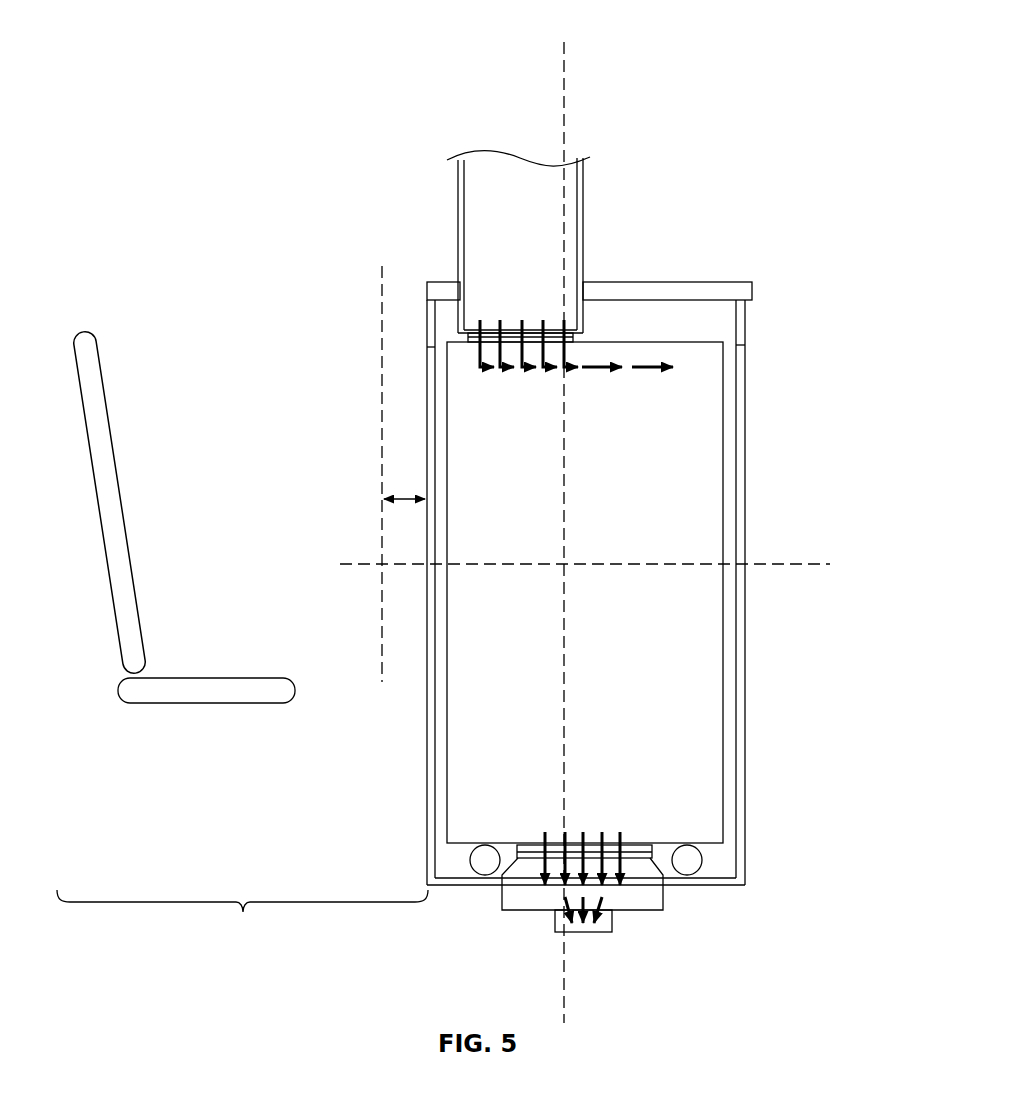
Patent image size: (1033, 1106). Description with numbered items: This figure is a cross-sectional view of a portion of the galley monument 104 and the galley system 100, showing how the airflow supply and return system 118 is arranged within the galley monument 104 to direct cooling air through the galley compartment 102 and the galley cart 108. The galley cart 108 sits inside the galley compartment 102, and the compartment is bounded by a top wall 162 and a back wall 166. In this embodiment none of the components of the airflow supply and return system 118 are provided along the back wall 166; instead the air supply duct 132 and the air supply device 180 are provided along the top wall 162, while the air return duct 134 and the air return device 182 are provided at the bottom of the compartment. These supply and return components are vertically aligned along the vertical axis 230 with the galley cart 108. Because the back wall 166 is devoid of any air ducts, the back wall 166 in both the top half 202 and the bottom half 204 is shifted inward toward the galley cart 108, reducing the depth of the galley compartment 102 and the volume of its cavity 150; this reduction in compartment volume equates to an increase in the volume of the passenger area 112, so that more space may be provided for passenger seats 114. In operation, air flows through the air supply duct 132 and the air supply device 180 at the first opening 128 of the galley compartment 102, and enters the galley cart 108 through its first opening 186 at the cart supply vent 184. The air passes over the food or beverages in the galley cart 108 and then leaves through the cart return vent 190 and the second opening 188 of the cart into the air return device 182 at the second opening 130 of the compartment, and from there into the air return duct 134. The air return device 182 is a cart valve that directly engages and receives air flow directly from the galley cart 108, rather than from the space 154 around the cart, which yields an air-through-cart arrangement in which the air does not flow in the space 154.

The galley system 100 is at (697, 47).
The galley compartment 102 is at (579, 545).
The galley monument 104 is at (705, 145).
The galley cart 108 is at (692, 460).
The passenger area 112 is at (242, 916).
The passenger seat 114 is at (108, 575).
The airflow supply and return system 118 is at (568, 559).
The first opening 128 is at (544, 326).
The second opening 130 is at (527, 862).
The air supply duct 132 is at (488, 200).
The air return duct 134 is at (575, 932).
The cavity 150 is at (675, 312).
The space 154 is at (453, 867).
The top wall 162 is at (728, 296).
The back wall 166 is at (427, 403).
The air supply device 180 is at (489, 337).
The air return device 182 is at (653, 888).
The cart supply vent 184 is at (510, 346).
The first opening 186 is at (532, 346).
The second opening 188 is at (553, 839).
The cart return vent 190 is at (575, 839).
The top half 202 is at (683, 521).
The bottom half 204 is at (683, 600).
The vertical axis 230 is at (566, 80).